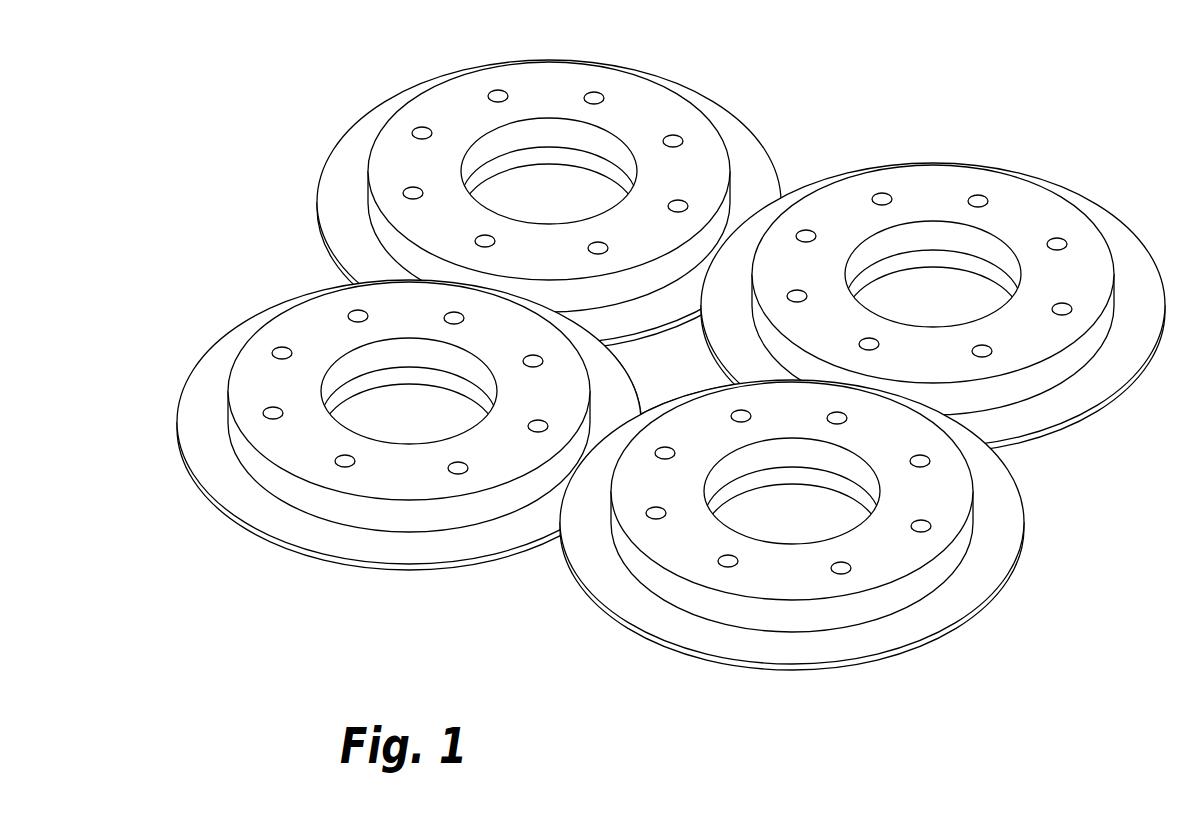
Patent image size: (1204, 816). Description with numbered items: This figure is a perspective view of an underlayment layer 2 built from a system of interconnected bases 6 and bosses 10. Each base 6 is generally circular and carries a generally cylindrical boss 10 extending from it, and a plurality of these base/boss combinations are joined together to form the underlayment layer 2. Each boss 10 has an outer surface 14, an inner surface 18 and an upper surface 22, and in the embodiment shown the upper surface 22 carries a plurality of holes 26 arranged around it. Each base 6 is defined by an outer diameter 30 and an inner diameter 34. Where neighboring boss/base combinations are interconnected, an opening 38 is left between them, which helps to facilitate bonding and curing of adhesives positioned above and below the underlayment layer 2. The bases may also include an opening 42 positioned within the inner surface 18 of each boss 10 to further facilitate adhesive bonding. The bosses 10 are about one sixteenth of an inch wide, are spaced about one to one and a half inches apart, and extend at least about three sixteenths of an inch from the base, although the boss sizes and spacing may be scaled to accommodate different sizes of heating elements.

The underlayment layer 2 is at (643, 338).
The base 6 is at (582, 159).
The boss 10 is at (862, 509).
The outer surface 14 is at (382, 402).
The inner surface 18 is at (549, 138).
The upper surface 22 is at (409, 366).
The holes 26 is at (1011, 476).
The outer diameter 30 is at (198, 463).
The inner diameter 34 is at (409, 428).
The opening 38 is at (673, 363).
The opening 42 is at (986, 245).